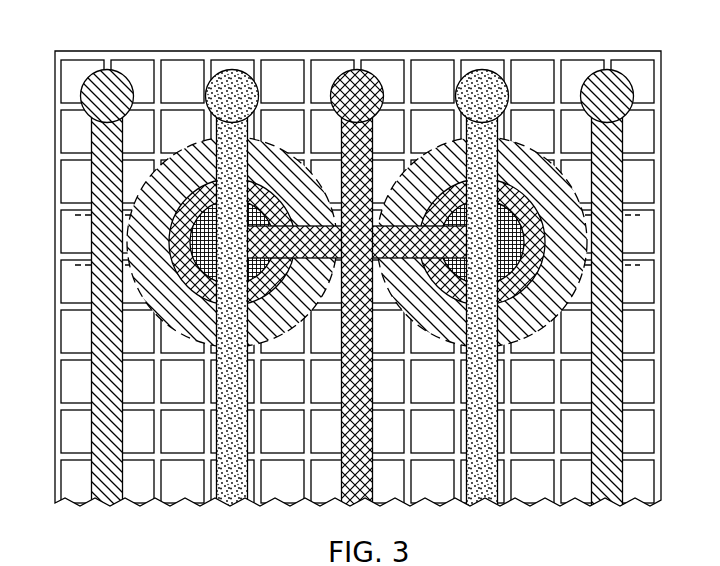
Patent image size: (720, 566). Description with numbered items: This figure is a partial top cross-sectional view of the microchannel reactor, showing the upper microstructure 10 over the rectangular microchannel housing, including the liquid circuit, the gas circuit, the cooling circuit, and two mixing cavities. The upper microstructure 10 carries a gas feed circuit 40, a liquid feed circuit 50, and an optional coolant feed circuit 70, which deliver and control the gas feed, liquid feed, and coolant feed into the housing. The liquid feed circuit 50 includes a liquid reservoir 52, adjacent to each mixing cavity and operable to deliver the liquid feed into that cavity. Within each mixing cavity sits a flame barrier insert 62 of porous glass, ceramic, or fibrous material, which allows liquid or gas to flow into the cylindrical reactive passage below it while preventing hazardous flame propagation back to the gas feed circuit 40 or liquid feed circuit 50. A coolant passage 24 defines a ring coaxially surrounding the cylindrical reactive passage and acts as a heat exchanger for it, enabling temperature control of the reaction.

The upper microstructure 10 is at (38, 58).
The gas feed circuit 40 is at (357, 260).
The coolant feed circuit 70 is at (357, 293).
The liquid feed circuit 50 is at (357, 293).
The flame barrier insert 62 is at (184, 165).
The coolant passage 24 is at (357, 242).
The liquid reservoir 52 is at (357, 260).